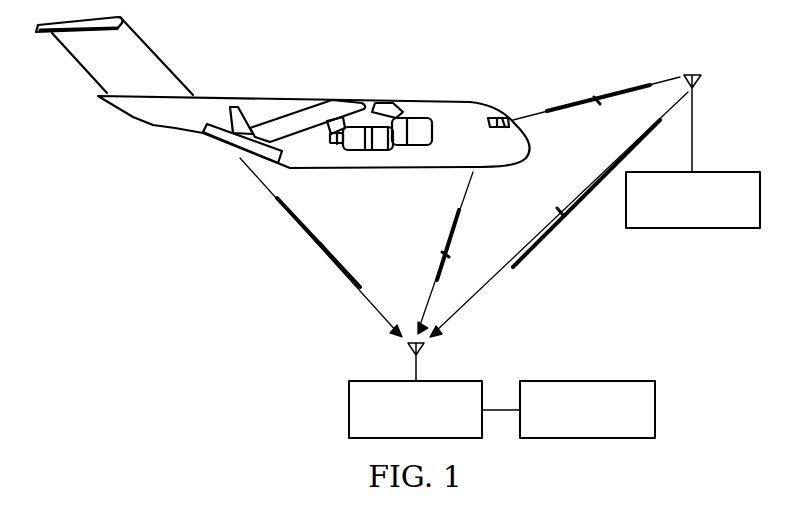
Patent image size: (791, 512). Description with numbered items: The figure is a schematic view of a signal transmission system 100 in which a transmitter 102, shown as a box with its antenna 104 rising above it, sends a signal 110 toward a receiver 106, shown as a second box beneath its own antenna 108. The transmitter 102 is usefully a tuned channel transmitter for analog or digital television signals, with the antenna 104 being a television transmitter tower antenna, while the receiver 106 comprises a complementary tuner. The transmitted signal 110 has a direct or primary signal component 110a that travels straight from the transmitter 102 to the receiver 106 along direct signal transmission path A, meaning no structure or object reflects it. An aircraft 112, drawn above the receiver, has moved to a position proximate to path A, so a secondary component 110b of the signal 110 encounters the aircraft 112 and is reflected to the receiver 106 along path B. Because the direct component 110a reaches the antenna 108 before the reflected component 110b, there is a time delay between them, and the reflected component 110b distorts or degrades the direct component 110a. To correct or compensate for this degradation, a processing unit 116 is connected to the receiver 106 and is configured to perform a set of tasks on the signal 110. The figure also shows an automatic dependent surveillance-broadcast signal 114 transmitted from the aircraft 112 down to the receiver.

The signal transmission system 100 is at (176, 323).
The transmitter 102 is at (731, 171).
The transmitter antenna 104 is at (694, 72).
The receiver 106 is at (348, 420).
The receiver antenna 108 is at (408, 353).
The transmitted signal 110 is at (528, 212).
The direct signal component 110a is at (531, 250).
The reflected signal component 110b is at (442, 251).
The aircraft 112 is at (360, 102).
The ADS-B signal 114 is at (320, 250).
The processing unit 116 is at (656, 418).